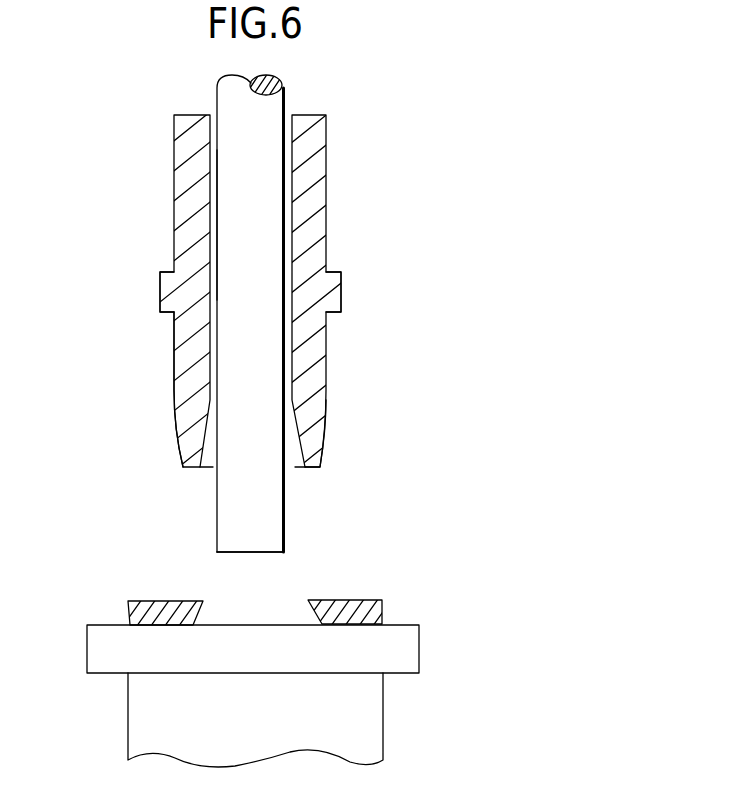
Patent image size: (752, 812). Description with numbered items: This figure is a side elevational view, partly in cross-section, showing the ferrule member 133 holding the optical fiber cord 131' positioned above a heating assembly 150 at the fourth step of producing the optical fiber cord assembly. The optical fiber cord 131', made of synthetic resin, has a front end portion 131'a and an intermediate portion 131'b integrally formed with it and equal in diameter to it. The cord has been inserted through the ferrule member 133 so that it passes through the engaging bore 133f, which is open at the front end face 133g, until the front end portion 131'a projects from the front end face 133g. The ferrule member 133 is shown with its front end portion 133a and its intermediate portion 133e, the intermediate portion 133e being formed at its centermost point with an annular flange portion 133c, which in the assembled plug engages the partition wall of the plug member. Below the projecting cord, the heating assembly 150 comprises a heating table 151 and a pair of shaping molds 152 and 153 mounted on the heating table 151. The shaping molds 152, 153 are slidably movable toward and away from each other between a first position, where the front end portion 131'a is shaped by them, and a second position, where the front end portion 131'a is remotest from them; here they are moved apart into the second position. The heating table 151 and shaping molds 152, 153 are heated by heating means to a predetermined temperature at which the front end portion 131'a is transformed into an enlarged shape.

The optical fiber cord 131' is at (310, 302).
The front end portion of the optical fiber cord 131'a is at (312, 544).
The intermediate portion of the optical fiber cord 131'b is at (145, 225).
The ferrule member 133 is at (332, 204).
The front end portion of the ferrule member 133a is at (336, 452).
The annular flange portion 133c is at (342, 290).
The intermediate portion of the ferrule member 133e is at (183, 386).
The engaging bore 133f is at (297, 468).
The front end face of the ferrule member 133g is at (188, 467).
The heating assembly 150 is at (447, 620).
The heating table 151 is at (419, 647).
The shaping mold 152 is at (148, 600).
The shaping mold 153 is at (320, 600).